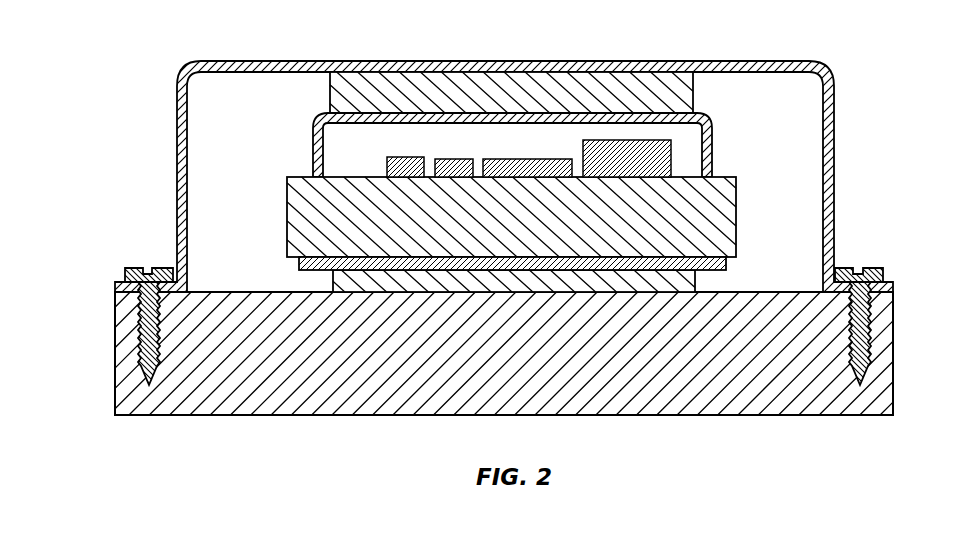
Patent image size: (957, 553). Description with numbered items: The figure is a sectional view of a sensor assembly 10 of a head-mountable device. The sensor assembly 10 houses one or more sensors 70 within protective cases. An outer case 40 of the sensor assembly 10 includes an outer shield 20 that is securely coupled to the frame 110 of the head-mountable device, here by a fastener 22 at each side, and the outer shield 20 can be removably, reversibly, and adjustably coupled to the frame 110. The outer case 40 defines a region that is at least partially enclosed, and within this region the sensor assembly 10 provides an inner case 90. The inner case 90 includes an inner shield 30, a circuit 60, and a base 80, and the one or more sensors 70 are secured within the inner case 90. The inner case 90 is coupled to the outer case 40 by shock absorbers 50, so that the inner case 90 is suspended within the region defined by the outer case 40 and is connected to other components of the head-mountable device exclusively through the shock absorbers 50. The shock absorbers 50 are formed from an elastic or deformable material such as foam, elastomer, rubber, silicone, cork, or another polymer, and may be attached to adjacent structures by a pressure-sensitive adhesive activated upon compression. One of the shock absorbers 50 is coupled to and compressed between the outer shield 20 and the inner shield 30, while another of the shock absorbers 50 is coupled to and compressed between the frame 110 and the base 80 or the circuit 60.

The sensor assembly 10 is at (186, 36).
The outer shield 20 is at (517, 60).
The fastener 22 is at (150, 268).
The inner shield 30 is at (544, 163).
The outer case 40 is at (90, 60).
The shock absorbers 50 is at (693, 88).
The circuit 60 is at (737, 215).
The sensors 70 is at (672, 152).
The base 80 is at (487, 269).
The inner case 90 is at (498, 197).
The frame 110 is at (775, 393).